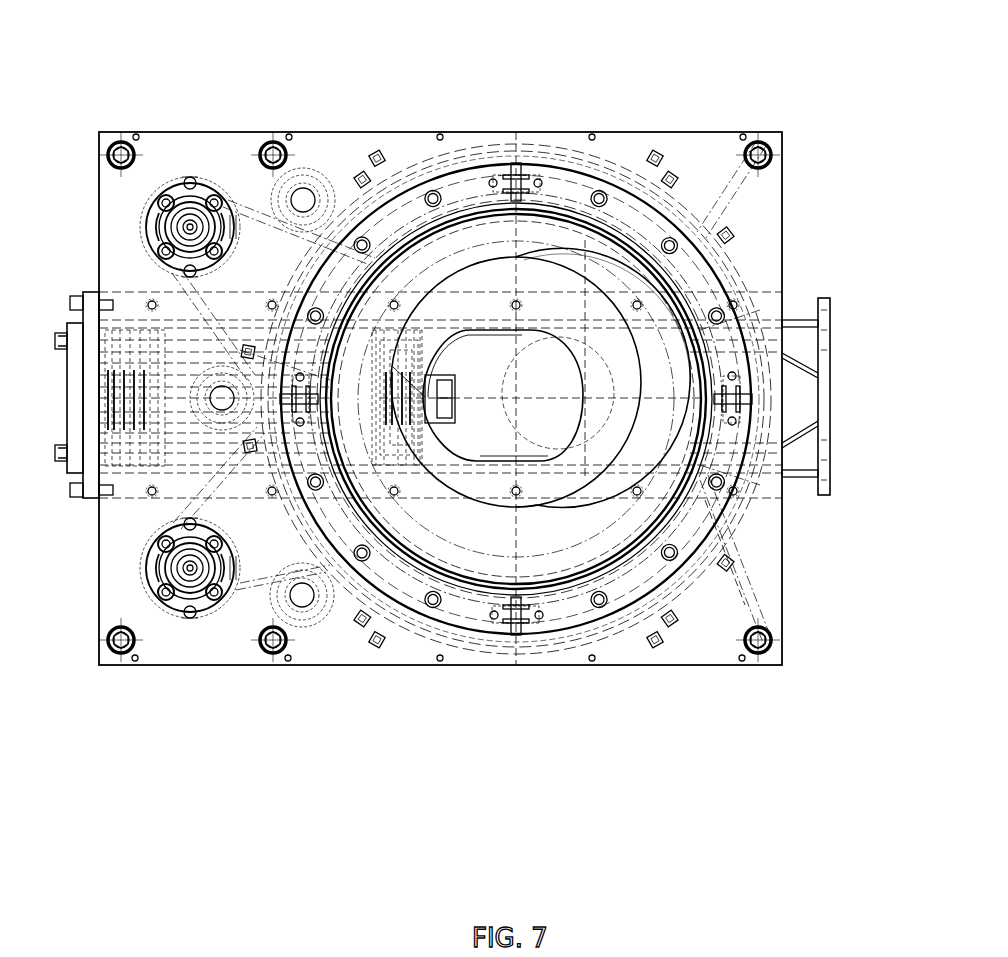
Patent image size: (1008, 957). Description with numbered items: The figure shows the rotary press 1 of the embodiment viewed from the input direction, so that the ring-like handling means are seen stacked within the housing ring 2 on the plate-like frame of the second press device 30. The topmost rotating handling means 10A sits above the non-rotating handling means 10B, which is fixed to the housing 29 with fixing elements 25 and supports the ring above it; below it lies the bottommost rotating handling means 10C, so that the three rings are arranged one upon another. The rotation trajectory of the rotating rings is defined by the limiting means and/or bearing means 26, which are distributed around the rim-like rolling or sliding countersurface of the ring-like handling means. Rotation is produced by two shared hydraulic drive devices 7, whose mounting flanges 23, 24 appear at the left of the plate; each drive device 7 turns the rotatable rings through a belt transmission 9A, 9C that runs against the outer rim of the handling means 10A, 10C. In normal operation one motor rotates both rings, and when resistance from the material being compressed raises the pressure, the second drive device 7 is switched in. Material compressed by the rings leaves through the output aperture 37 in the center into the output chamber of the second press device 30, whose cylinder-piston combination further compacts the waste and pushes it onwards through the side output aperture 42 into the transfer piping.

The vacuum valve assembly 1 is at (165, 90).
The valve housing ring 2 is at (605, 223).
The drive device 7 is at (136, 436).
The upper drive flange 23 is at (163, 242).
The lower drive flange 24 is at (167, 597).
The limiting means and/or bearing means 26 is at (363, 238).
The topmost rotating handling means 10A is at (598, 265).
The non-rotating handling means 10B is at (545, 525).
The bottommost ring-like handling means 10C is at (593, 470).
The output aperture 37 is at (503, 389).
The output aperture 42 is at (833, 400).
The second press device 30 is at (138, 513).
The fixing elements 25 is at (745, 605).
The housing 29 is at (772, 630).
The belt transmission 9A is at (282, 465).
The belt transmission 9C is at (253, 580).